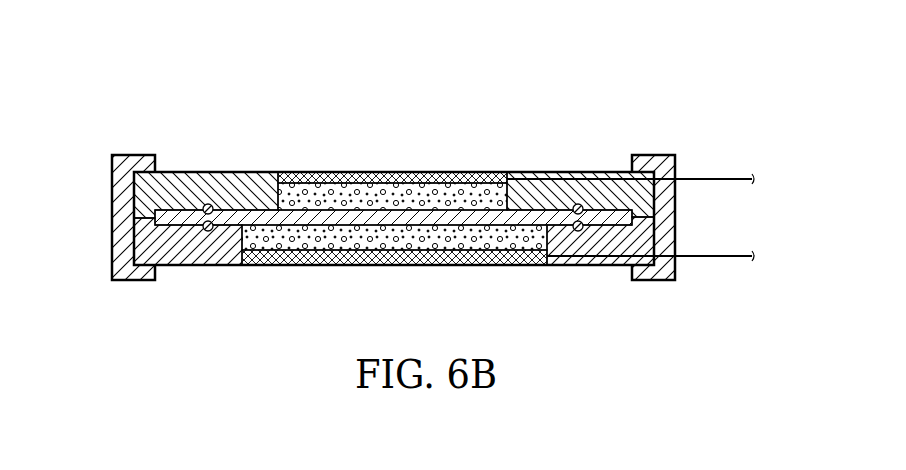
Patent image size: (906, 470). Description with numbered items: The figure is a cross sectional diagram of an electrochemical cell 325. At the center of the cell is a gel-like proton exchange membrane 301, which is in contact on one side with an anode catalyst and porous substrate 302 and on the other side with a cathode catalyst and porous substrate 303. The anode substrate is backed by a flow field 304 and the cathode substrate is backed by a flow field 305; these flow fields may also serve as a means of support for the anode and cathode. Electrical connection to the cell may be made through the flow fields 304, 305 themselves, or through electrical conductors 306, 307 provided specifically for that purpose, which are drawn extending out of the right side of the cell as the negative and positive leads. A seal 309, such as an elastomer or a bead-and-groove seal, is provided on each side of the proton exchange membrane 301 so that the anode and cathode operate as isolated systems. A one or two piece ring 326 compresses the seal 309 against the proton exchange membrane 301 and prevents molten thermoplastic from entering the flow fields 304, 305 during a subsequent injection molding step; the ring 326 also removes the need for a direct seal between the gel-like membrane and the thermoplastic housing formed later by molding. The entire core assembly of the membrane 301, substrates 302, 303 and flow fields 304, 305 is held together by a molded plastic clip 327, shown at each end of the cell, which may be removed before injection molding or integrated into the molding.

The proton exchange membrane 301 is at (237, 206).
The anode catalyst and porous substrate 302 is at (326, 195).
The cathode catalyst and porous substrate 303 is at (343, 265).
The flow field 304 is at (424, 172).
The flow field 305 is at (426, 265).
The electrical conductor 306 is at (715, 262).
The electrical conductor 307 is at (718, 177).
The seal 309 is at (211, 231).
The electrochemical cell 325 is at (659, 66).
The ring 326 is at (180, 172).
The molded plastic clip 327 is at (143, 155).